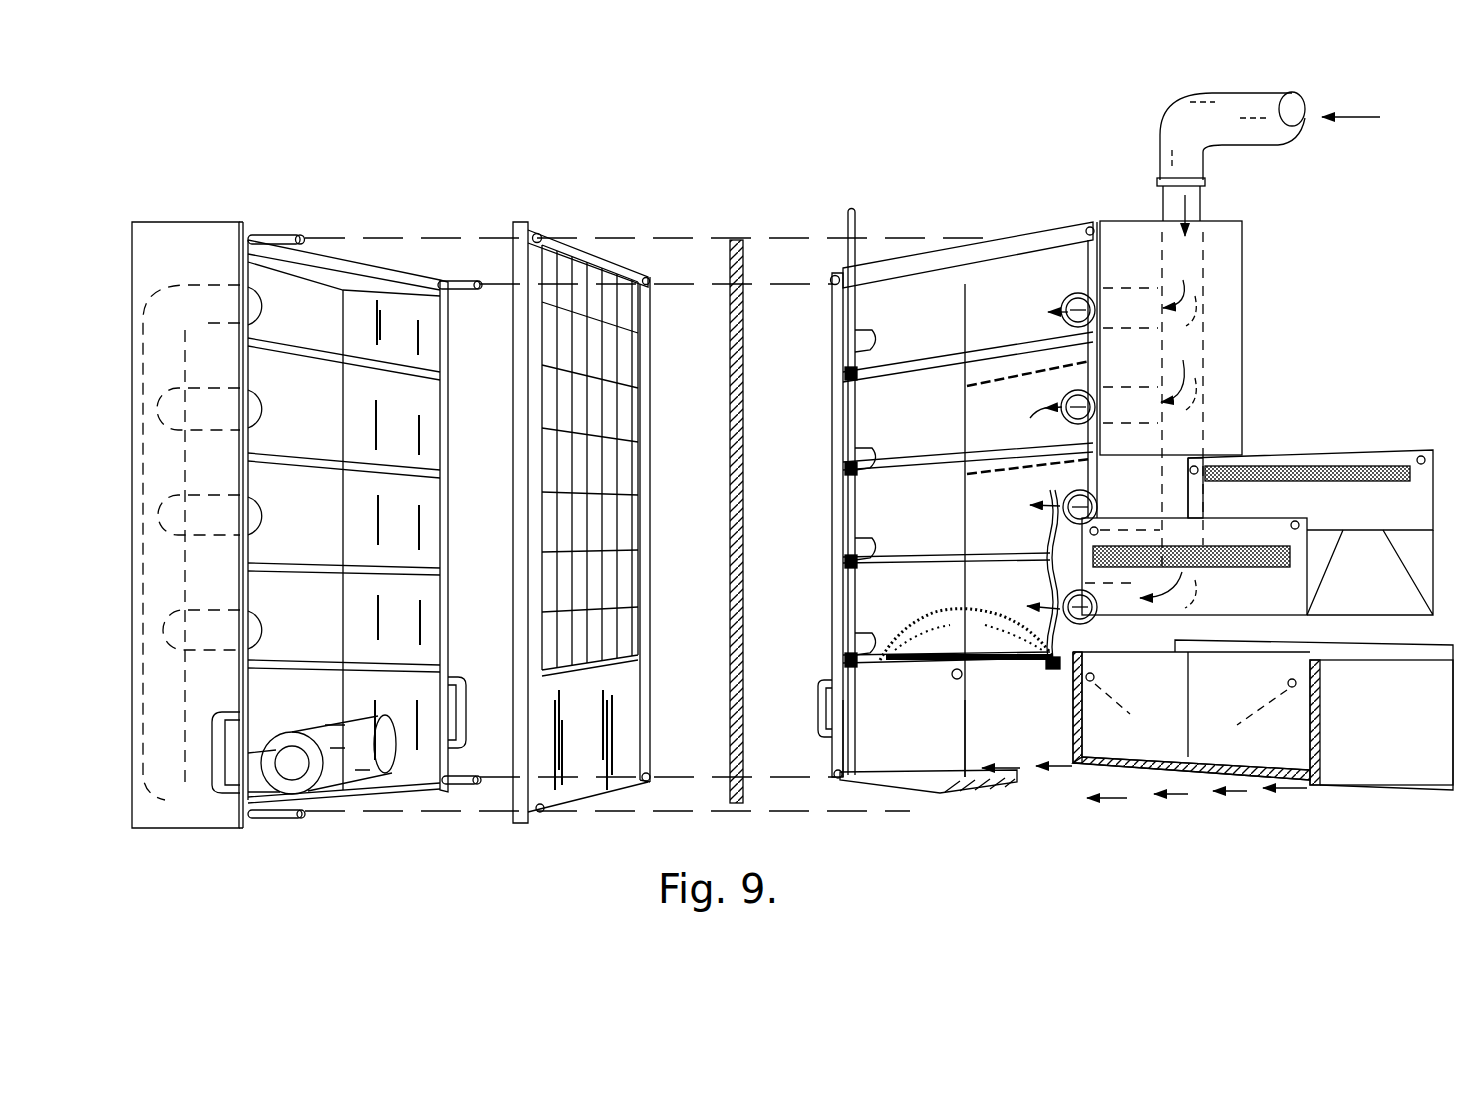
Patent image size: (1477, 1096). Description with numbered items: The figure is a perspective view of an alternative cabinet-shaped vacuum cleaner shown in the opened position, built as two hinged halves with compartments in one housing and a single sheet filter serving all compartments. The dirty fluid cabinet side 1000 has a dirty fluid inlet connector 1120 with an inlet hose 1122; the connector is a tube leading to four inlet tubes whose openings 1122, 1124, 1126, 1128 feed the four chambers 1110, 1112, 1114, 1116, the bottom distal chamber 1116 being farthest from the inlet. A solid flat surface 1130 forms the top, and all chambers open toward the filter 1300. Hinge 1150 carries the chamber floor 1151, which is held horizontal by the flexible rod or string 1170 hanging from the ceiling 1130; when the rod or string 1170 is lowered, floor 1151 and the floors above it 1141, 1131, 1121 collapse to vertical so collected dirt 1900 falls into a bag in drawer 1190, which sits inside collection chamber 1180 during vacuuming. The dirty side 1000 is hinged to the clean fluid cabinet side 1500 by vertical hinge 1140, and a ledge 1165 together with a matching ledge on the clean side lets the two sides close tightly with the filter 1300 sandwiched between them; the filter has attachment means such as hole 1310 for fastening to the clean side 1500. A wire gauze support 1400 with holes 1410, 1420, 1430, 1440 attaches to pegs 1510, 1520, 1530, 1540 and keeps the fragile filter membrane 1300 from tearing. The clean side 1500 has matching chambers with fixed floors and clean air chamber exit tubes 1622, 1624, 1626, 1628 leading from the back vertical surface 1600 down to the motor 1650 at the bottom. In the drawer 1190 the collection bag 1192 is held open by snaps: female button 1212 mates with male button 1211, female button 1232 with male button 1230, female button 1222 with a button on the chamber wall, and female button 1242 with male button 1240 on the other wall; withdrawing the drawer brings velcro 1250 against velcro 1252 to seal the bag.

The dirty fluid cabinet side 1000 is at (973, 242).
The dirty air chamber 1110 is at (883, 327).
The dirty air chamber 1112 is at (881, 424).
The dirty air chamber 1114 is at (884, 521).
The distal dirty air chamber 1116 is at (885, 614).
The dirty fluid inlet connector 1120 is at (1207, 203).
The shelf support bracket 1121 is at (848, 373).
The inlet hose / dirty air chamber inlet opening 1122 is at (1062, 303).
The dirty air chamber inlet opening 1124 is at (1036, 417).
The dirty air chamber inlet opening 1126 is at (1060, 523).
The dirty air chamber inlet opening 1128 is at (1060, 597).
The solid flat top surface / ceiling 1130 is at (1088, 228).
The chamber floor 1131 is at (848, 451).
The vertical hinge 1140 is at (833, 277).
The chamber floor 1141 is at (847, 541).
The hinge 1150 is at (1047, 673).
The chamber floor 1151 is at (848, 634).
The ledge 1165 is at (817, 707).
The flexible rod or string 1170 is at (853, 240).
The dirt-collection chamber 1180 is at (883, 730).
The drawer 1190 is at (1357, 738).
The collection bag 1192 is at (1390, 594).
The male snap-on button 1211 is at (1253, 717).
The female snap-on button 1212 is at (1307, 519).
The female snap-on button 1222 is at (1423, 457).
The male snap-on button 1230 is at (1125, 707).
The female snap-on button 1232 is at (1192, 502).
The male snap-on button 1240 is at (948, 676).
The female snap-on button 1242 is at (1200, 467).
The velcro strip 1250 is at (1327, 467).
The velcro strip 1252 is at (1245, 564).
The filter 1300 is at (728, 474).
The filter attachment hole 1310 is at (730, 300).
The wire gauze support 1400 is at (589, 237).
The support hole 1410 is at (648, 278).
The support hole 1420 is at (649, 775).
The support hole 1430 is at (544, 810).
The support hole 1440 is at (537, 233).
The clean fluid cabinet side 1500 is at (353, 246).
The peg 1510 is at (460, 280).
The peg 1520 is at (462, 784).
The peg 1530 is at (288, 818).
The peg 1540 is at (287, 235).
The back vertical surface 1600 is at (132, 418).
The clean air chamber exit tube 1622 is at (267, 305).
The clean air chamber exit tube 1624 is at (263, 410).
The clean air chamber exit tube 1626 is at (267, 517).
The clean air chamber exit tube 1628 is at (263, 627).
The motor 1650 is at (348, 793).
The collected dirt 1900 is at (990, 645).